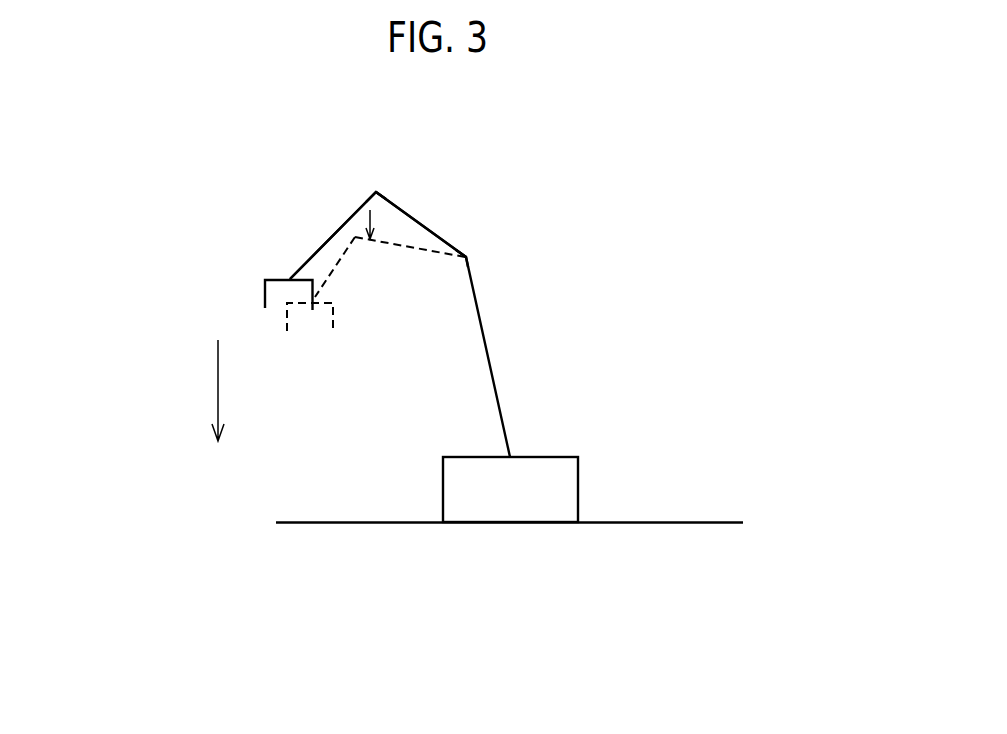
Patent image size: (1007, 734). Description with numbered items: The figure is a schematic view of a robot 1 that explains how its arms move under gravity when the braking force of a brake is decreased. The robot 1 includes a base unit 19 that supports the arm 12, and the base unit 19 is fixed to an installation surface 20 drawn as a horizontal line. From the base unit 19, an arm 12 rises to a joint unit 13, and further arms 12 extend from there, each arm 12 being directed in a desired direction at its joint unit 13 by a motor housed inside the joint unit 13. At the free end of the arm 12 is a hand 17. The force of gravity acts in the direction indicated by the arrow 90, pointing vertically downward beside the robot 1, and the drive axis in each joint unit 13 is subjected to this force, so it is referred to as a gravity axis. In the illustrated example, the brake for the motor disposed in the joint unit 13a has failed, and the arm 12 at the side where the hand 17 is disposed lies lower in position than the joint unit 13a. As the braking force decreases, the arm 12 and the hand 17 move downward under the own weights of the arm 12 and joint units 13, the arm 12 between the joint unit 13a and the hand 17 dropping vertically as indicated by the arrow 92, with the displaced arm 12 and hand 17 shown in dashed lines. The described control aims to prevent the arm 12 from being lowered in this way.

The robot 1 is at (575, 201).
The arm 12 is at (322, 242).
The joint unit 13 is at (376, 192).
The joint unit 13a is at (466, 257).
The hand 17 is at (265, 280).
The base unit 19 is at (578, 473).
The installation surface 20 is at (707, 522).
The arrow 90 is at (217, 380).
The arrow 92 is at (372, 213).